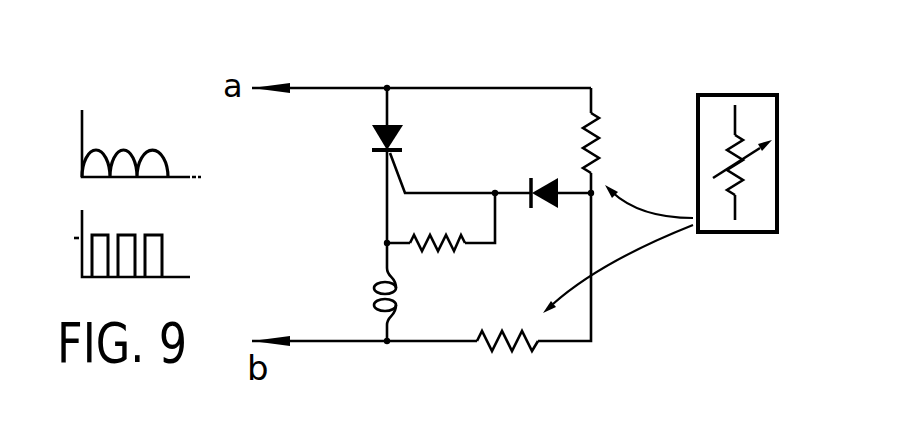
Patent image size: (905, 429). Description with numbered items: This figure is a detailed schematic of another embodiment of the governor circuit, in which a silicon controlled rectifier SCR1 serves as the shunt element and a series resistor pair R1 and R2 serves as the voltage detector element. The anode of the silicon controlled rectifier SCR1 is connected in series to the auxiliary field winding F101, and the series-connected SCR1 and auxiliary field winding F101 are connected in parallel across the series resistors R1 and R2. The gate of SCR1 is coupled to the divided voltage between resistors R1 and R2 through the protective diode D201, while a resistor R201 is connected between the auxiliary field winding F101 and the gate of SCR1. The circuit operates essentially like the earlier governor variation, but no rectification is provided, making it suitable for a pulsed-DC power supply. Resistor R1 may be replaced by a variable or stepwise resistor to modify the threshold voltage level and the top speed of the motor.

The silicon controlled rectifier SCR1 is at (410, 145).
The resistor R1 is at (612, 143).
The resistor R2 is at (507, 328).
The resistor R201 is at (440, 229).
The protective diode D201 is at (541, 207).
The auxiliary field winding F101 is at (416, 296).